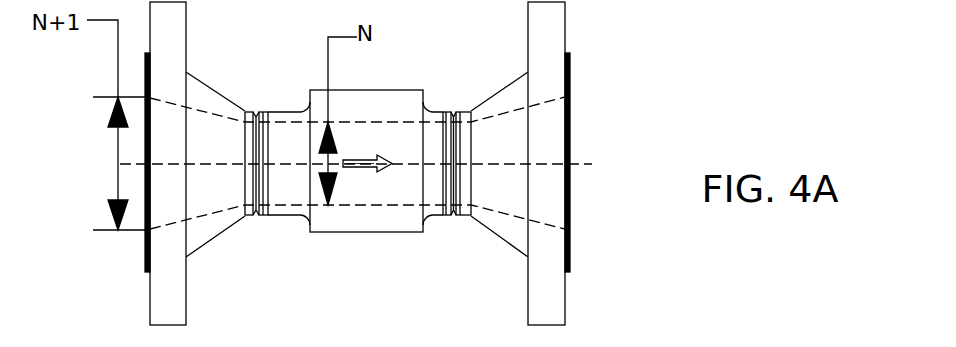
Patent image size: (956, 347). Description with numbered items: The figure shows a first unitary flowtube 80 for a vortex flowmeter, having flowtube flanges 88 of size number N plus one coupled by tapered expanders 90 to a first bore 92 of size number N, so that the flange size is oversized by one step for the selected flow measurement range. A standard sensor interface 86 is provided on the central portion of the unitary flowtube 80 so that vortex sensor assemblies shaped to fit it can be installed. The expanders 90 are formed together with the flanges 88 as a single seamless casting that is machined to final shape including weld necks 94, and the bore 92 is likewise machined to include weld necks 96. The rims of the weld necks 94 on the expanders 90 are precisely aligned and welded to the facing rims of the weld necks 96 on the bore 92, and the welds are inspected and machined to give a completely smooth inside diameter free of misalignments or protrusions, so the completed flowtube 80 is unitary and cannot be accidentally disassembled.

The first unitary flowtube 80 is at (635, 38).
The standard sensor interface 86 is at (356, 233).
The flowtube flanges 88 is at (150, 293).
The tapered expanders 90 is at (205, 250).
The first bore 92 is at (388, 123).
The weld necks 94 is at (262, 217).
The weld necks 96 is at (273, 217).